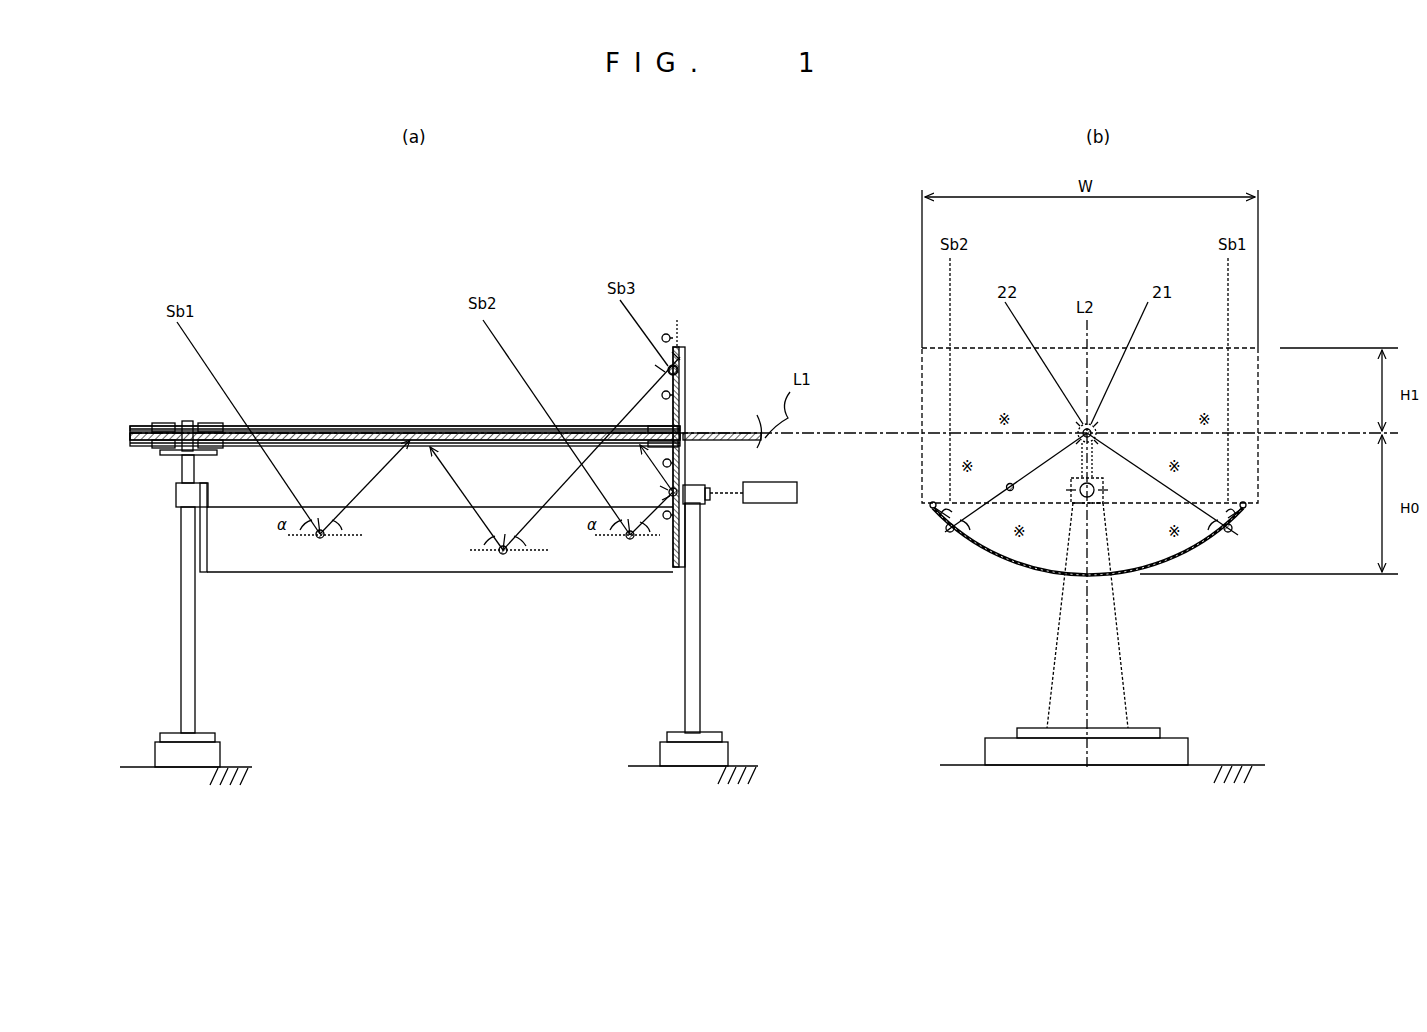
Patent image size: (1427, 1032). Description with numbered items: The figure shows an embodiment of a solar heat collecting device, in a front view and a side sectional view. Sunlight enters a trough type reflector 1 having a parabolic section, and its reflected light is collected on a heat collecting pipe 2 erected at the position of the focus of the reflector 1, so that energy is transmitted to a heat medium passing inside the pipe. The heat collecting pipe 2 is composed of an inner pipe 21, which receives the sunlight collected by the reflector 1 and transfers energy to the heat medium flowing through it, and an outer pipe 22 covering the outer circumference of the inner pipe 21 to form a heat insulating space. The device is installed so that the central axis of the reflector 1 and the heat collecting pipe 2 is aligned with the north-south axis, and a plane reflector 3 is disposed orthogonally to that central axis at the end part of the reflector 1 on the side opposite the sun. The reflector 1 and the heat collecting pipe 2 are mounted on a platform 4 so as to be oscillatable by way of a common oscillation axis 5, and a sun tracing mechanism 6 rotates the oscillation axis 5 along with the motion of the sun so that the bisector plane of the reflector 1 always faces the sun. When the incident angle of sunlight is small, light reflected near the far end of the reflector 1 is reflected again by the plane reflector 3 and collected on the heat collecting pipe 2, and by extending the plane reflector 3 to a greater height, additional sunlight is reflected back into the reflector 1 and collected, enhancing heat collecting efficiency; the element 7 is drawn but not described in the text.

The trough type reflector 1 is at (560, 555).
The heat collecting pipe 2 is at (440, 300).
The inner pipe 21 is at (360, 431).
The outer pipe 22 is at (315, 425).
The plane reflector 3 is at (678, 561).
The platform 4 is at (700, 680).
The oscillation axis 5 is at (705, 503).
The sun tracing mechanism 6 is at (753, 492).
The light source sensor 7 is at (920, 376).